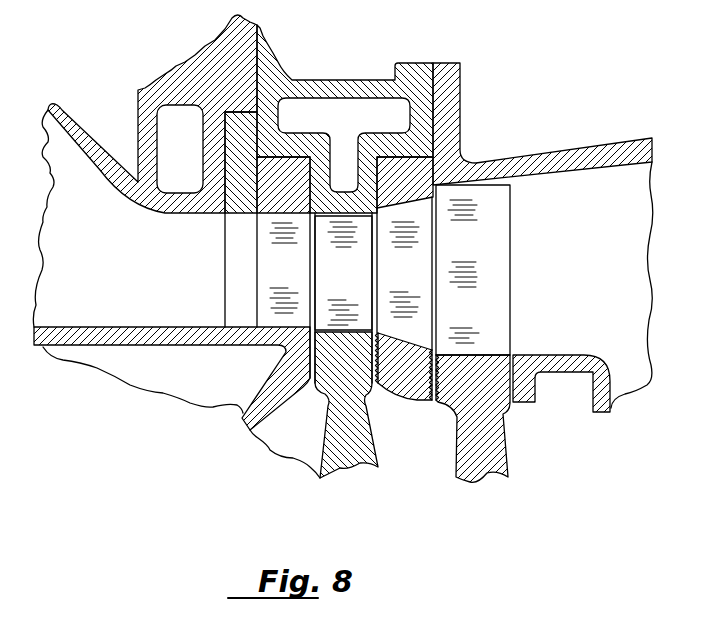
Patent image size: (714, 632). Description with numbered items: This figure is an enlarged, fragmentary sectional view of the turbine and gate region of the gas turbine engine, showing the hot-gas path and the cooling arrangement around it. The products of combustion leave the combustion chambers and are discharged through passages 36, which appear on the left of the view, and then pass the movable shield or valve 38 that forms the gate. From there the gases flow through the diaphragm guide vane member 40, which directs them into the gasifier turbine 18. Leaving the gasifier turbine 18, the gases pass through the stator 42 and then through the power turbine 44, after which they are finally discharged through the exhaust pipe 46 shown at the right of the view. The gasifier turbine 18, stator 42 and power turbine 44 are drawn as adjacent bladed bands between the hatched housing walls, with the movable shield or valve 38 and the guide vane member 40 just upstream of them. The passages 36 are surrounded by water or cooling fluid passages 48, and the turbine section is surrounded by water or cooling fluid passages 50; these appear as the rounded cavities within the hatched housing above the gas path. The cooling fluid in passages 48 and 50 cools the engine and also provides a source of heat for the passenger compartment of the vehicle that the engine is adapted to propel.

The gasifier turbine 18 is at (348, 283).
The passages 36 is at (111, 277).
The movable shield or valve 38 is at (235, 232).
The diaphragm guide vane member 40 is at (288, 282).
The stator 42 is at (414, 290).
The power turbine 44 is at (479, 260).
The exhaust pipe 46 is at (585, 278).
The cooling fluid passages 48 is at (187, 162).
The cooling fluid passages 50 is at (351, 127).